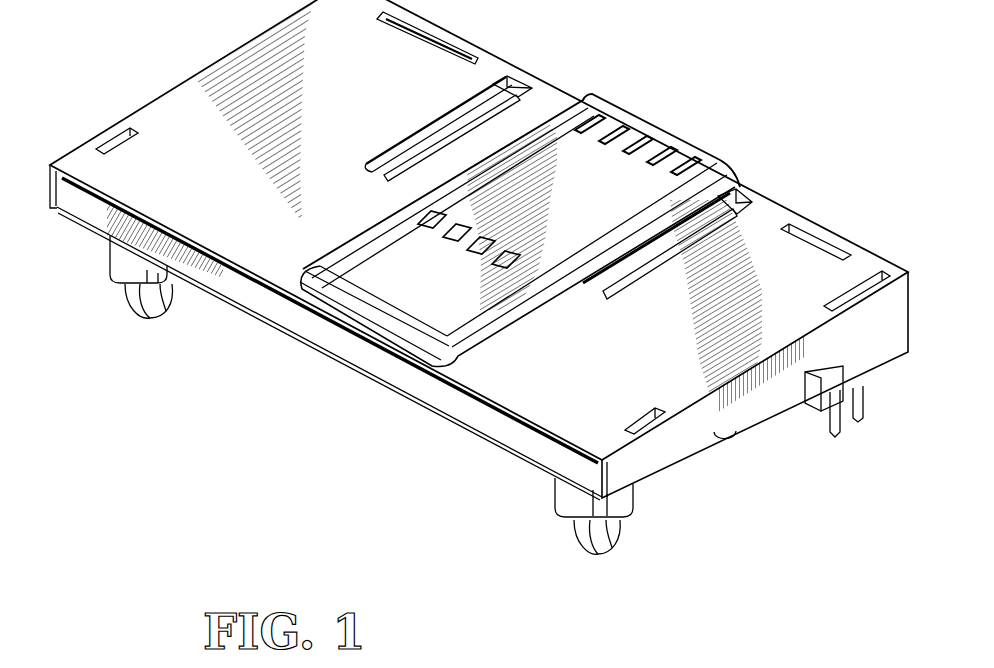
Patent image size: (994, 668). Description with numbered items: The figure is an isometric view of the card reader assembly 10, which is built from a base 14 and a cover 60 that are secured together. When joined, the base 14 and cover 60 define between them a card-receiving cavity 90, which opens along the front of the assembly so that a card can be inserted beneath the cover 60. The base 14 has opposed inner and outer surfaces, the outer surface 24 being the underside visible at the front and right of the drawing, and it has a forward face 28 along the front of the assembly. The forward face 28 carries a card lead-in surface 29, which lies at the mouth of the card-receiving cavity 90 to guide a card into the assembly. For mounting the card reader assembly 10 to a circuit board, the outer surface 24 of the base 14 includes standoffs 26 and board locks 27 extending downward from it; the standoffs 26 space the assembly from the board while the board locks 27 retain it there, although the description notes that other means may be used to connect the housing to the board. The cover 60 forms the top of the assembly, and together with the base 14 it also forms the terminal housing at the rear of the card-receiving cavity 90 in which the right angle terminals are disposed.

The card reader assembly 10 is at (671, 103).
The base 14 is at (477, 440).
The outer surface 24 is at (397, 390).
The standoffs 26 is at (563, 493).
The board locks 27 is at (616, 533).
The forward face 28 is at (303, 338).
The card lead-in surface 29 is at (260, 298).
The cover 60 is at (824, 220).
The card-receiving cavity 90 is at (351, 351).